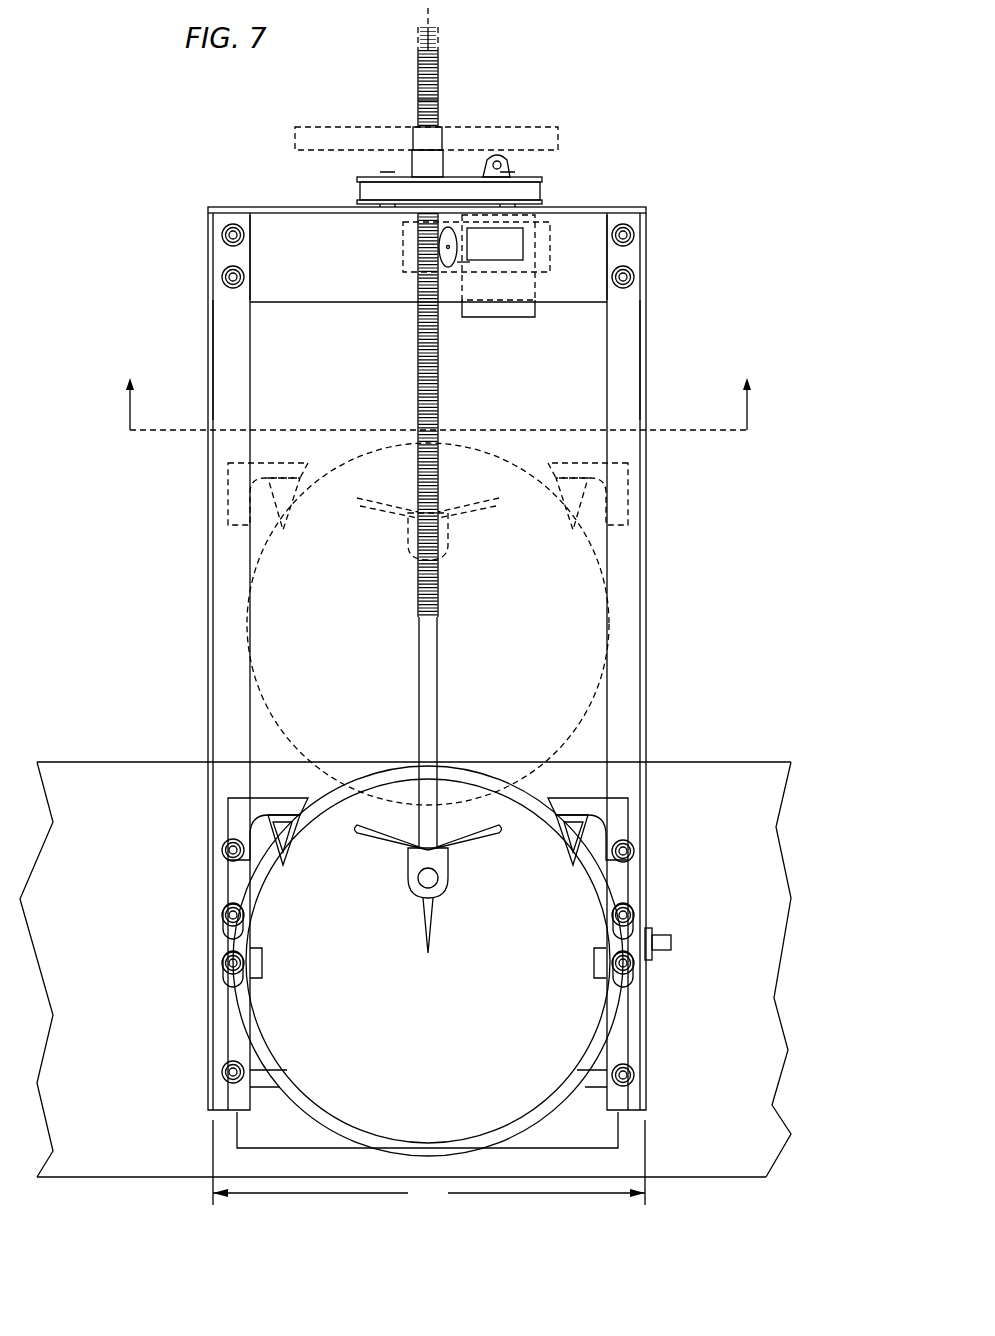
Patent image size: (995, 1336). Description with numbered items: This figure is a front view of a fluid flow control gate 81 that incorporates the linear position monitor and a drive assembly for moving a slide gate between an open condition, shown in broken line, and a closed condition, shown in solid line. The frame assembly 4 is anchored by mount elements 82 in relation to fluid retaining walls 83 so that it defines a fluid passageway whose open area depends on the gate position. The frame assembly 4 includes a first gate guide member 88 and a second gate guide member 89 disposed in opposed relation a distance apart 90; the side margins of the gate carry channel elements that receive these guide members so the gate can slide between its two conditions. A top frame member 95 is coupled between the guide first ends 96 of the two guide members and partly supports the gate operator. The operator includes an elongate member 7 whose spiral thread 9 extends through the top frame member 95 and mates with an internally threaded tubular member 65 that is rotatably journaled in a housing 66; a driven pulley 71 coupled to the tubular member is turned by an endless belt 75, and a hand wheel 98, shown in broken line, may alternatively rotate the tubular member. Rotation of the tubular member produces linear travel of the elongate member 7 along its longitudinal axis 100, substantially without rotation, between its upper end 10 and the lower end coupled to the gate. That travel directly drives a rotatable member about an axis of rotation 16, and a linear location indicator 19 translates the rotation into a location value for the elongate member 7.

The longitudinal axis 100 is at (429, 17).
The end 10 is at (432, 47).
The elongate member 7 is at (415, 106).
The hand wheel 98 is at (330, 127).
The internally threaded tubular member 65 is at (440, 160).
The driven pulley 71 is at (360, 180).
The endless belt 75 is at (528, 190).
The housing 66 is at (380, 206).
The fluid flow control gate 81 is at (712, 162).
The top frame member 95 is at (280, 255).
The guide first ends 96 is at (215, 248).
The axis of rotation 16 is at (375, 245).
The linear location indicator 19 is at (498, 266).
The frame assembly 4 is at (650, 357).
The spiral thread 9 is at (438, 392).
The first gate guide member 88 is at (240, 380).
The second gate guide member 89 is at (620, 405).
The mount element 82 is at (222, 852).
The fluid retaining walls 83 is at (128, 972).
The distance apart 90 is at (429, 1162).